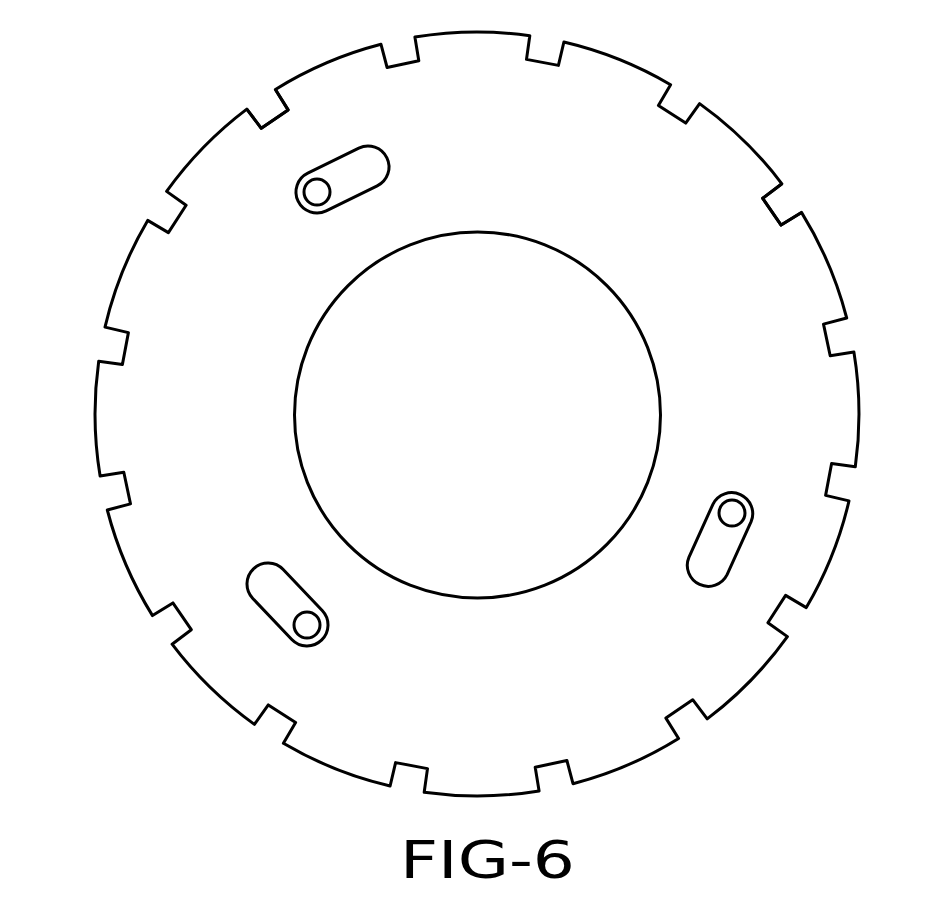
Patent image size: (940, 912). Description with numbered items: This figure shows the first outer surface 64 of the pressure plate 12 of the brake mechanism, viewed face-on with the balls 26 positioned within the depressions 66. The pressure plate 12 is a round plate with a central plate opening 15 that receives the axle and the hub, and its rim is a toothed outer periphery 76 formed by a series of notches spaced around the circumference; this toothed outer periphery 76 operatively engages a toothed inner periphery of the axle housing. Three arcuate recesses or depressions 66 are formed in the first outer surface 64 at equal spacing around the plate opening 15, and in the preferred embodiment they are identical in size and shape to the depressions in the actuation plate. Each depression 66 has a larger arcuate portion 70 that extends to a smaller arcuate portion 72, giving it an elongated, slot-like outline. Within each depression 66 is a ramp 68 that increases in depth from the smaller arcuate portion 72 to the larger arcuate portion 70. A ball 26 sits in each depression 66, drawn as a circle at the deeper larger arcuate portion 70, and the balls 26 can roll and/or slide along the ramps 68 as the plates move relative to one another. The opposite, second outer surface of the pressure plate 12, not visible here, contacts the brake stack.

The pressure plate 12 is at (667, 153).
The first outer surface 64 is at (505, 414).
The plate opening 15 is at (487, 420).
The toothed outer periphery 76 is at (782, 187).
The depressions 66 is at (337, 180).
The balls 26 is at (314, 192).
The ramp 68 is at (717, 550).
The smaller arcuate portion 72 is at (260, 578).
The larger arcuate portion 70 is at (305, 626).